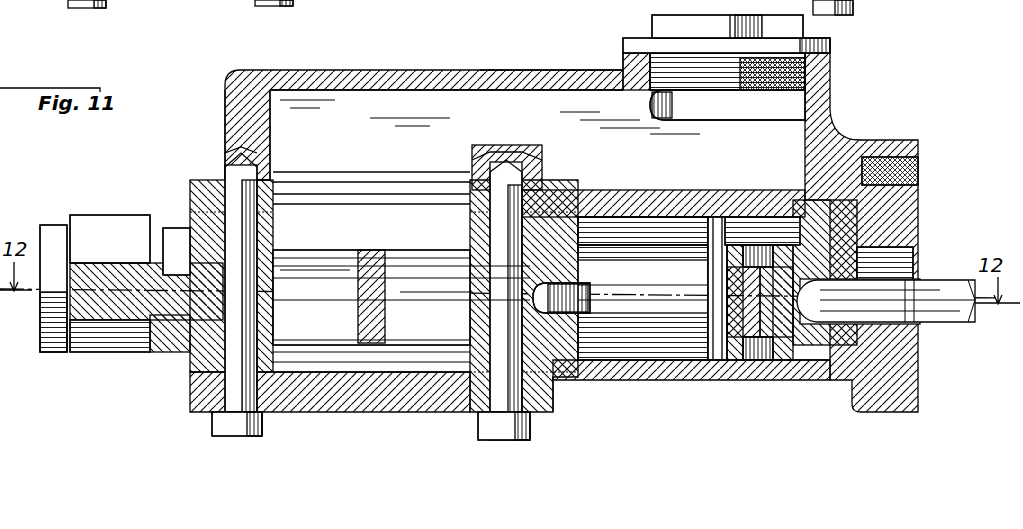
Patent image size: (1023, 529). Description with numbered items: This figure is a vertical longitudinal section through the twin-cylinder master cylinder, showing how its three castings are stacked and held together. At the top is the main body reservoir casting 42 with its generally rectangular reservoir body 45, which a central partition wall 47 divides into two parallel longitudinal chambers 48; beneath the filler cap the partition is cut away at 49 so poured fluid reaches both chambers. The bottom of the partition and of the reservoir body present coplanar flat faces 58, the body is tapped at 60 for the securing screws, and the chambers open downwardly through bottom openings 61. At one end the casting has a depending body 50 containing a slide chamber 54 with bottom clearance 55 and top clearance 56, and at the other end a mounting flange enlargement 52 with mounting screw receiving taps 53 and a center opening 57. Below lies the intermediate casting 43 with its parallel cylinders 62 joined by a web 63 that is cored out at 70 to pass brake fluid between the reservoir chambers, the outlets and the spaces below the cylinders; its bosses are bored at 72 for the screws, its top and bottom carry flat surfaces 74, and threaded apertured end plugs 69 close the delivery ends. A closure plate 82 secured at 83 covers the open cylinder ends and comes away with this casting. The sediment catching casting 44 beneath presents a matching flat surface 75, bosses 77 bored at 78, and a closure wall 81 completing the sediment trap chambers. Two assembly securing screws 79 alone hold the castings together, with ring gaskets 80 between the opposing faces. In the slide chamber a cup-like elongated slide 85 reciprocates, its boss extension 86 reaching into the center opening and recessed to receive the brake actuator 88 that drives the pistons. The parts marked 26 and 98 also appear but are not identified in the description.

The cover plate 26 is at (684, 12).
The main body reservoir casting 42 is at (432, 72).
The intermediate casting 43 is at (172, 240).
The sediment catching casting 44 is at (386, 421).
The reservoir body 45 is at (567, 80).
The central partition wall 47 is at (484, 100).
The longitudinal chambers 48 is at (343, 122).
The cut-away portion of partition 49 is at (720, 131).
The depending body 50 is at (718, 378).
The mounting flange enlargement 52 is at (892, 398).
The mounting screw receiving taps 53 is at (912, 170).
The slide chamber 54 is at (642, 378).
The bottom clearance 55 is at (670, 382).
The top clearance 56 is at (706, 226).
The center opening 57 is at (918, 350).
The flat faces 58 is at (207, 185).
The taps 60 is at (238, 158).
The bottom openings 61 is at (392, 195).
The parallel cylinders 62 is at (163, 364).
The web 63 is at (386, 318).
The end plugs 69 is at (57, 234).
The cored passages 70 is at (368, 252).
The bores 72 is at (264, 288).
The flat surfaces 74 is at (194, 230).
The matching flat surface 75 is at (192, 368).
The bosses 77 is at (470, 376).
The bores 78 is at (556, 404).
The assembly securing screws 79 is at (82, 8).
The ring gaskets 80 is at (340, 200).
The closure wall 81 is at (330, 406).
The closure plate 82 is at (600, 222).
The closure plate securing means 83 is at (586, 300).
The cup-like elongated slide 85 is at (838, 378).
The boss extension 86 is at (915, 256).
The brake actuator 88 is at (945, 326).
The seal ring 98 is at (760, 250).